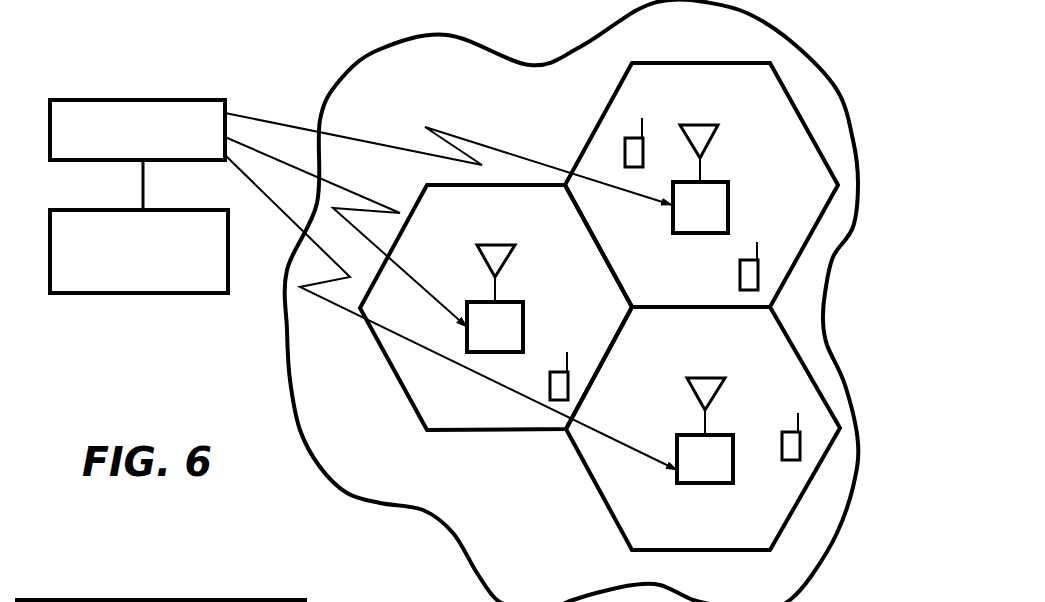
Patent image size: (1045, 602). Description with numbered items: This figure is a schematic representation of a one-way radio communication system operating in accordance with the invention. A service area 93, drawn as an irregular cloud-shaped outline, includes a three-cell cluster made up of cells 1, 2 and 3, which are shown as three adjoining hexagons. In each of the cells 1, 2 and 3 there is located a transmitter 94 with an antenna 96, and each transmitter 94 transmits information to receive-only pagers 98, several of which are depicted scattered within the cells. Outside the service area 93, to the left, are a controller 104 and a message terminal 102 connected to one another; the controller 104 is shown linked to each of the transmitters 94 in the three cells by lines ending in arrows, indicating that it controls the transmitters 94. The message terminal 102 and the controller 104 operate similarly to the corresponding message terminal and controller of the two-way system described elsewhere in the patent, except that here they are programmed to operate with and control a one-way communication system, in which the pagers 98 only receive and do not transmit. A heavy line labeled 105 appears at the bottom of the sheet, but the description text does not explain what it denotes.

The service area 93 is at (378, 50).
The transmitter 94 is at (728, 197).
The antenna 96 is at (718, 135).
The receive-only pagers 98 is at (645, 150).
The message terminal 102 is at (108, 210).
The controller 104 is at (108, 100).
The communication line 105 is at (272, 600).
The cell 1 is at (661, 539).
The cell 2 is at (663, 292).
The cell 3 is at (455, 421).